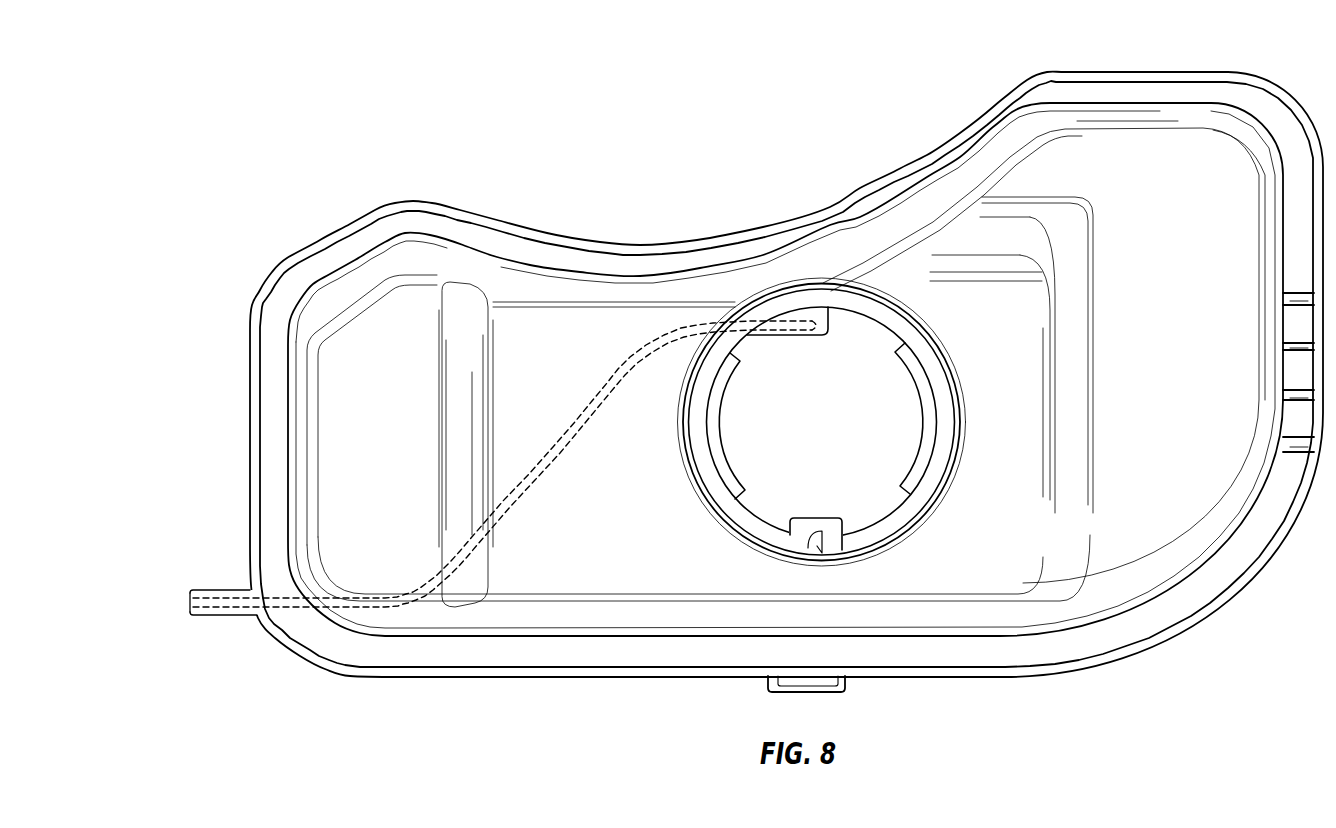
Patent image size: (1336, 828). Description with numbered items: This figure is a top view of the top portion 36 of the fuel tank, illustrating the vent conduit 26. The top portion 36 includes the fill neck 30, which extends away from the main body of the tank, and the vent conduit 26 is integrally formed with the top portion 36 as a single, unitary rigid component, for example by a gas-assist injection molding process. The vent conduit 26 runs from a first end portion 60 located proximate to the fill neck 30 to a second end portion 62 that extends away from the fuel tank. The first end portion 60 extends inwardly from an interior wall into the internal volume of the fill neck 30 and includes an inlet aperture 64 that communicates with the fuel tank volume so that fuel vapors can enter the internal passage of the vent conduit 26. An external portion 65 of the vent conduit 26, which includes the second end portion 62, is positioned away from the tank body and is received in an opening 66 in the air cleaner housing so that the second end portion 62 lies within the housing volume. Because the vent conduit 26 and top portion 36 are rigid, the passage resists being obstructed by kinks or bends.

The vent conduit 26 is at (627, 352).
The fill neck 30 is at (843, 282).
The top portion 36 is at (1117, 628).
The first end portion 60 is at (780, 333).
The second end portion 62 is at (230, 617).
The inlet aperture 64 is at (822, 334).
The external portion 65 is at (215, 589).
The opening 66 is at (176, 586).